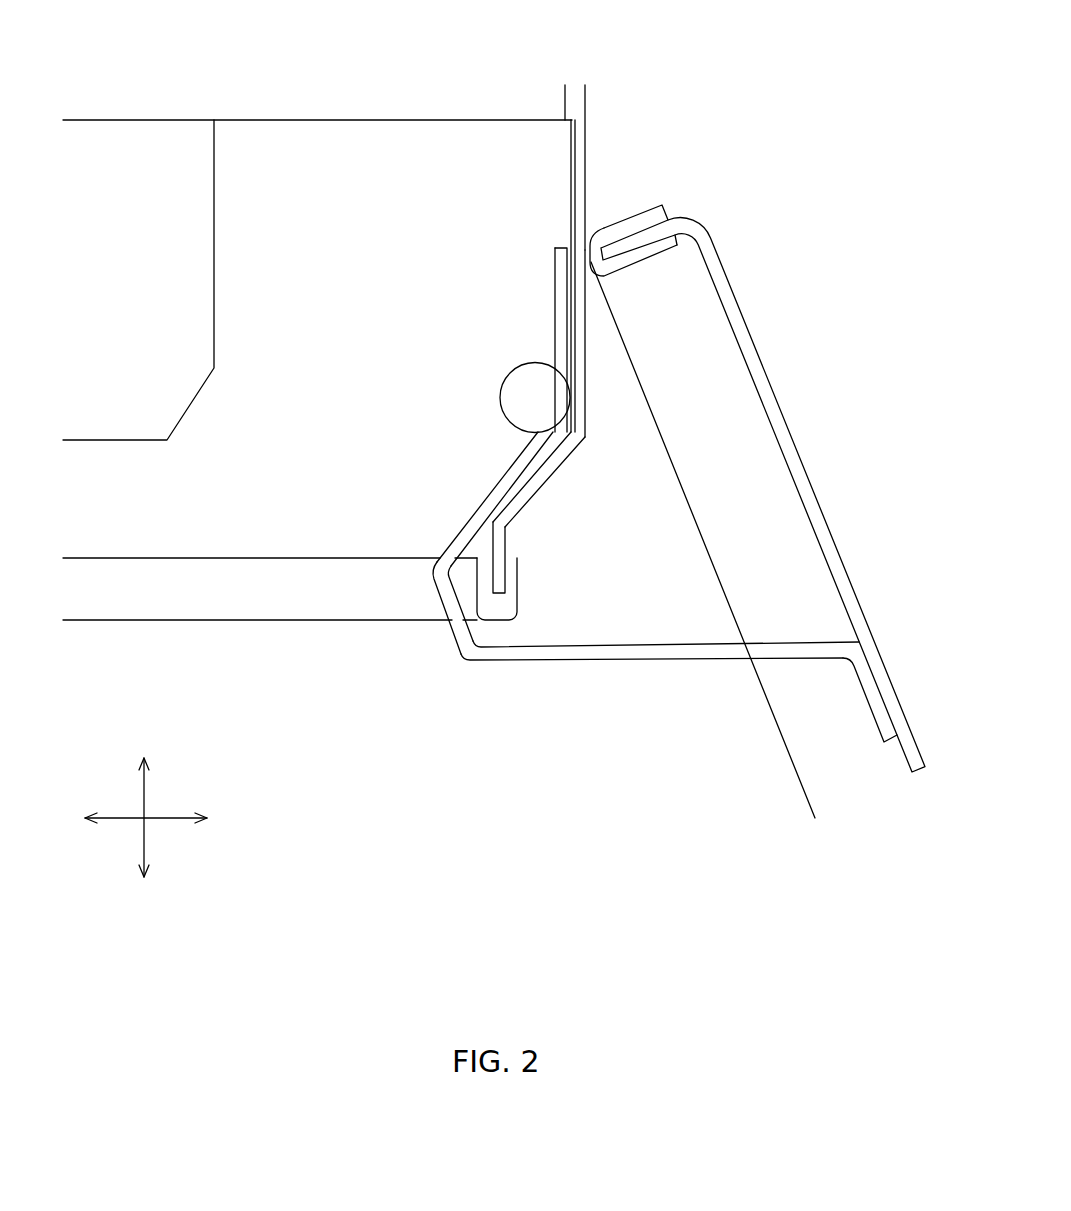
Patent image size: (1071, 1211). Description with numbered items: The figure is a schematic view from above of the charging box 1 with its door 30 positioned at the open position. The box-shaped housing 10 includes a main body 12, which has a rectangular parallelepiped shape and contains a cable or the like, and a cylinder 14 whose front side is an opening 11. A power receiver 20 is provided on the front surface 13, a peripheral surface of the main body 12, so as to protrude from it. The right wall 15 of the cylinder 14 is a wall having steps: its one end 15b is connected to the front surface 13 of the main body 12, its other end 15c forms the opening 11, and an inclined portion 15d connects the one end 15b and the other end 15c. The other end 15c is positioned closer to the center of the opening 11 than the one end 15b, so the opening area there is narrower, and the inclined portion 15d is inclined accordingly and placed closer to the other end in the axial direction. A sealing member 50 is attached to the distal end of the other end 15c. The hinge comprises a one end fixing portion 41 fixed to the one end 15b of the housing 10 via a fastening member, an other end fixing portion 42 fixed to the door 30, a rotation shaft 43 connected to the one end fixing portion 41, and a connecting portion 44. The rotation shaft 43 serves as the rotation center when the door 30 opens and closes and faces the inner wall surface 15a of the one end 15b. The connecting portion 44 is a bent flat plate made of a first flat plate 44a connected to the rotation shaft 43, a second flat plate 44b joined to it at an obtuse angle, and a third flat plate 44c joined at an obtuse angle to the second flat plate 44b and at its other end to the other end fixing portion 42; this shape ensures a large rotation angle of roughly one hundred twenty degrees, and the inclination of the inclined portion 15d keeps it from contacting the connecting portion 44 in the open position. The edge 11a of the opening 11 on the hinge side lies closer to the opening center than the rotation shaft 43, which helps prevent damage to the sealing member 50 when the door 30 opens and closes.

The charging box 1 is at (479, 38).
The housing 10 is at (365, 167).
The opening 11 is at (208, 600).
The edge of the opening 11a is at (510, 598).
The main body 12 is at (577, 110).
The front surface 13 is at (348, 124).
The cylinder 14 is at (601, 356).
The right wall 15 is at (587, 435).
The inner wall surface 15a is at (568, 218).
The one end 15b is at (588, 317).
The other end 15c is at (503, 552).
The inclined portion 15d is at (554, 468).
The power receiver 20 is at (207, 292).
The door 30 is at (797, 465).
The one end fixing portion 41 is at (560, 318).
The other end fixing portion 42 is at (870, 692).
The rotation shaft 43 is at (510, 396).
The connecting portion 44 is at (523, 660).
The first flat plate 44a is at (477, 505).
The second flat plate 44b is at (460, 630).
The third flat plate 44c is at (603, 657).
The sealing member 50 is at (318, 605).